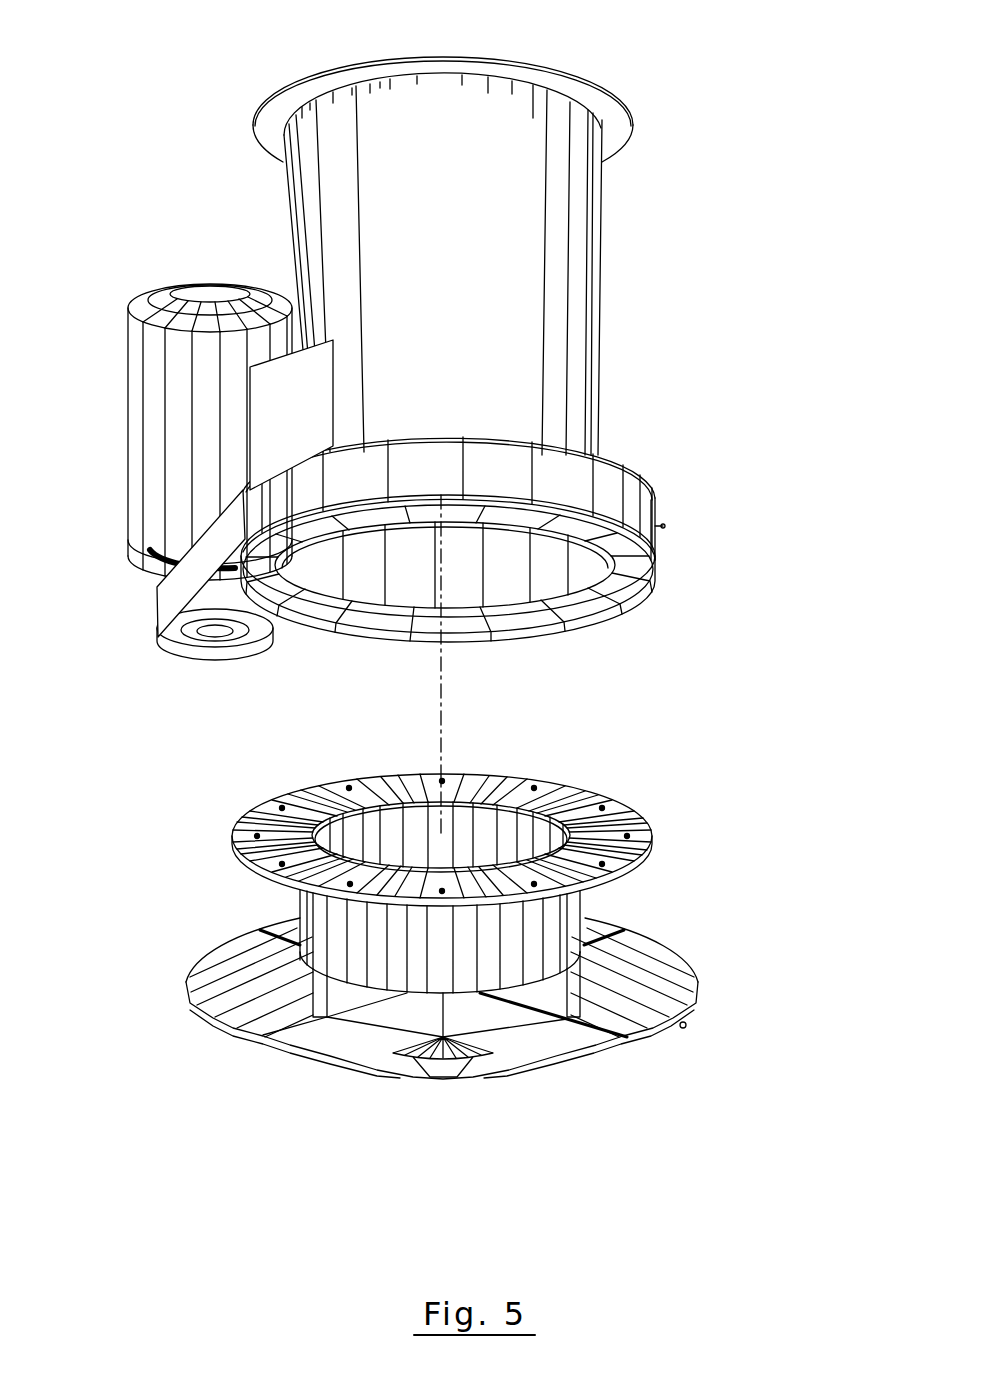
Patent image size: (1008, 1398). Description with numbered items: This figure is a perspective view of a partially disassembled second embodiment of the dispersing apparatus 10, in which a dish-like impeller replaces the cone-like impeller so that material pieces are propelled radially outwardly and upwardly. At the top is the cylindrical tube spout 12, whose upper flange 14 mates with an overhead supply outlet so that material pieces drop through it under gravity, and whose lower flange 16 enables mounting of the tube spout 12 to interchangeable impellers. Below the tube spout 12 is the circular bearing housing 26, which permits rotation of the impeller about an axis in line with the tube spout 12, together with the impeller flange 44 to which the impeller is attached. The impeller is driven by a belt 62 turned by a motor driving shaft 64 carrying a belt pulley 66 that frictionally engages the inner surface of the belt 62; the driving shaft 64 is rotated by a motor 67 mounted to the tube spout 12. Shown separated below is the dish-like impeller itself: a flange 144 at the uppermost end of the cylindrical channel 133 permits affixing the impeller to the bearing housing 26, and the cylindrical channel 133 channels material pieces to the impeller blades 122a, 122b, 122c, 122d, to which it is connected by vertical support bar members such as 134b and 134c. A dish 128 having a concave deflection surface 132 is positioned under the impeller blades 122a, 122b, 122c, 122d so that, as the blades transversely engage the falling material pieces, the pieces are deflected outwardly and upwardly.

The dispersing apparatus 10 is at (612, 60).
The cylindrical tube spout 12 is at (588, 275).
The upper flange 14 is at (627, 133).
The lower flange 16 is at (630, 468).
The circular bearing housing 26 is at (665, 526).
The impeller flange 44 is at (628, 578).
The belt 62 is at (585, 452).
The motor driving shaft 64 is at (213, 633).
The belt pulley 66 is at (213, 607).
The motor 67 is at (138, 462).
The flange 144 is at (640, 818).
The cylindrical channel 133 is at (580, 913).
The concave deflection surface 132 is at (666, 974).
The impeller blade 122a is at (283, 945).
The impeller blade 122b is at (398, 1030).
The impeller blade 122c is at (517, 1030).
The impeller blade 122d is at (617, 932).
The vertical support bar member 134b is at (277, 1043).
The vertical support bar member 134c is at (563, 1022).
The dish 128 is at (685, 1028).